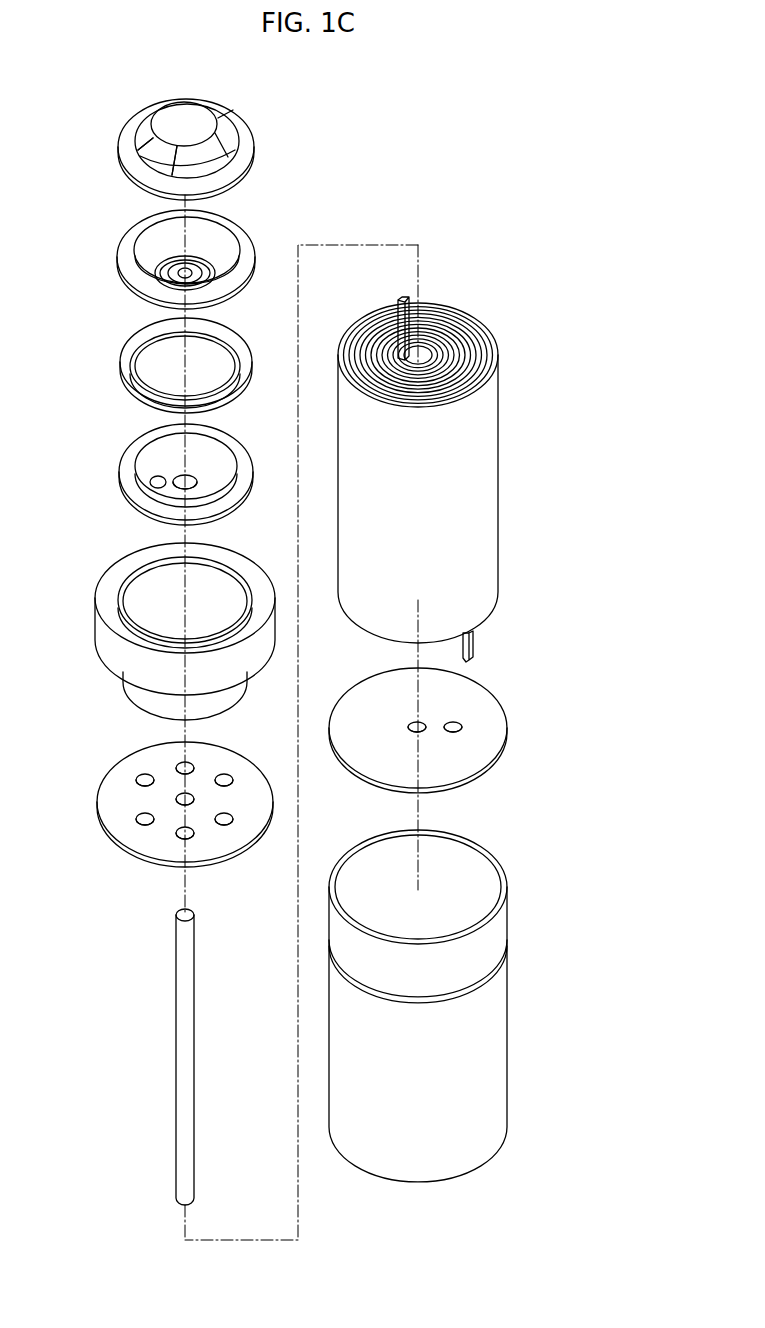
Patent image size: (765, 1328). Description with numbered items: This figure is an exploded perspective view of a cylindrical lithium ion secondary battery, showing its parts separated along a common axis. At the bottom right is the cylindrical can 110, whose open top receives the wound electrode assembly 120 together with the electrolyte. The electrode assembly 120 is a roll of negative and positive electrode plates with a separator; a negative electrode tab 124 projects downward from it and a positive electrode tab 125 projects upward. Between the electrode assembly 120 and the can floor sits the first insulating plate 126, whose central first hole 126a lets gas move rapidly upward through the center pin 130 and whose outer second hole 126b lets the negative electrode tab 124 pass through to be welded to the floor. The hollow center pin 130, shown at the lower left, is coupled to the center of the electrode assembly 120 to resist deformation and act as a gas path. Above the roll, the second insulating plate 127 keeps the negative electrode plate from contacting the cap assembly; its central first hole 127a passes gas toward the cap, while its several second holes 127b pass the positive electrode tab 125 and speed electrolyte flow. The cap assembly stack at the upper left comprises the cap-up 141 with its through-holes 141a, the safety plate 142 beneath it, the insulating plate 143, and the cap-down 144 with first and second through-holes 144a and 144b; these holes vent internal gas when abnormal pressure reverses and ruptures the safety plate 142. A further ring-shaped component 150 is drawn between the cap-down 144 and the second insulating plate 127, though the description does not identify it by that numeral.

The cylindrical can 110 is at (497, 1040).
The electrode assembly 120 is at (452, 456).
The negative electrode tab 124 is at (475, 643).
The positive electrode tab 125 is at (403, 298).
The first insulating plate 126 is at (456, 730).
The first hole 126a is at (422, 722).
The second hole 126b is at (458, 722).
The second insulating plate 127 is at (156, 816).
The first hole 127a is at (184, 796).
The second holes 127b is at (228, 824).
The center pin 130 is at (180, 1043).
The cap-up 141 is at (122, 143).
The through-holes 141a is at (150, 162).
The safety plate 142 is at (122, 253).
The insulating plate 143 is at (122, 358).
The cap-down 144 is at (122, 488).
The first through-hole 144a is at (182, 478).
The second through-hole 144b is at (155, 478).
The gasket 150 is at (97, 627).